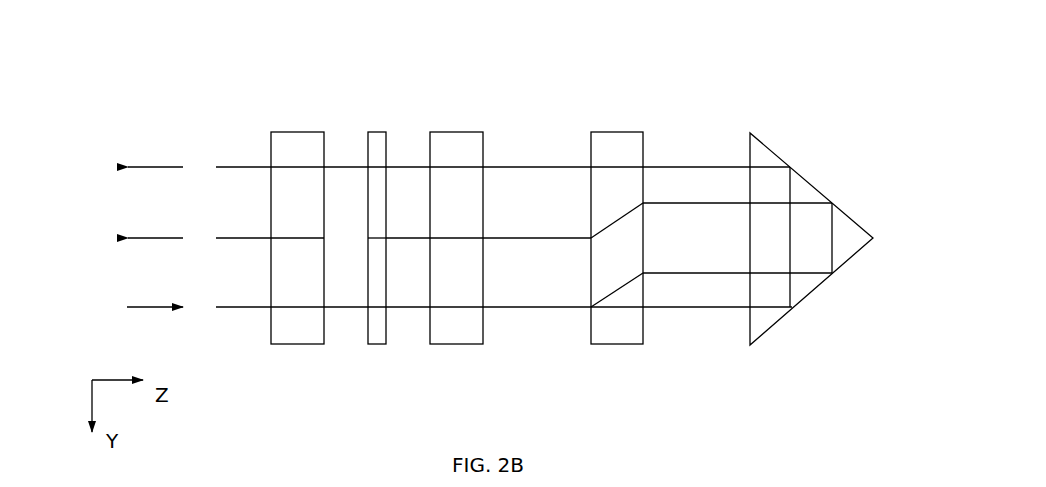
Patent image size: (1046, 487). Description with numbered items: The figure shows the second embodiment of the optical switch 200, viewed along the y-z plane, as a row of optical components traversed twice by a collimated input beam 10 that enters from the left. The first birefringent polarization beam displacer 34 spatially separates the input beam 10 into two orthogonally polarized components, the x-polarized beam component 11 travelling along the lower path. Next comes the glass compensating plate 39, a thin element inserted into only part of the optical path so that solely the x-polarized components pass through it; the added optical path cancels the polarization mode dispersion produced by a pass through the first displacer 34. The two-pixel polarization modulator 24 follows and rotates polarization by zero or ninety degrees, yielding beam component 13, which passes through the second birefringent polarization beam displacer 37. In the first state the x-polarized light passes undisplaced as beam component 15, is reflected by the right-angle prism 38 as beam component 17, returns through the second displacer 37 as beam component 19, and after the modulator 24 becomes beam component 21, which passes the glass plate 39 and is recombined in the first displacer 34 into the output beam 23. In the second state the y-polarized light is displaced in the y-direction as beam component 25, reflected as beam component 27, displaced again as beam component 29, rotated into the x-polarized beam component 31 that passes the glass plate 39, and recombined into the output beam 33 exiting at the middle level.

The optical switch 200 is at (240, 66).
The collimated input beam 10 is at (175, 309).
The output beam 23 is at (175, 169).
The output beam 33 is at (175, 240).
The first birefringent polarization beam displacer 34 is at (300, 132).
The glass compensating plate 39 is at (376, 132).
The polarization modulator 24 is at (458, 132).
The second birefringent polarization beam displacer 37 is at (618, 132).
The right-angle prism 38 is at (812, 183).
The beam component 11 is at (360, 351).
The beam component 13 is at (537, 351).
The beam component 15 is at (717, 351).
The beam component 17 is at (716, 138).
The beam component 19 is at (537, 138).
The beam component 21 is at (346, 126).
The beam component 25 is at (737, 257).
The beam component 27 is at (737, 190).
The beam component 29 is at (537, 208).
The beam component 31 is at (419, 166).